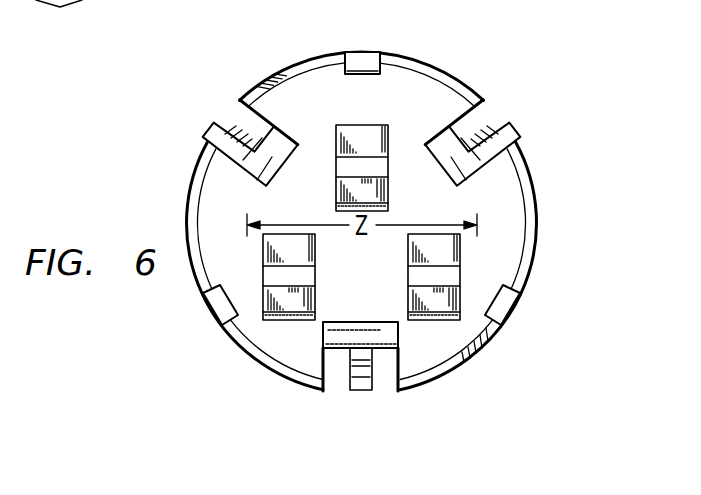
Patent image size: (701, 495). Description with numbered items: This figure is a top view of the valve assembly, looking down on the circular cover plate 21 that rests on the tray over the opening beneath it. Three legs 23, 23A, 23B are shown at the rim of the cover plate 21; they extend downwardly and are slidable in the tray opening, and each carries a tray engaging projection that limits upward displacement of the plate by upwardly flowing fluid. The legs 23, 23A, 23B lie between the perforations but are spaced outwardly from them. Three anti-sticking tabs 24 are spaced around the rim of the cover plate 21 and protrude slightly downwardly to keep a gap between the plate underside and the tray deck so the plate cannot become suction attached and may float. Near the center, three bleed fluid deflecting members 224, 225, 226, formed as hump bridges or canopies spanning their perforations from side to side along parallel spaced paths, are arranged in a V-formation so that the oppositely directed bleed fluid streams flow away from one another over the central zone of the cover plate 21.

The cover plate 21 is at (428, 67).
The leg 23 is at (343, 350).
The leg 23A is at (467, 133).
The leg 23B is at (260, 138).
The anti-sticking tab 24 is at (362, 60).
The bleed fluid deflecting member 224 is at (417, 277).
The bleed fluid deflecting member 225 is at (305, 278).
The bleed fluid deflecting member 226 is at (345, 167).